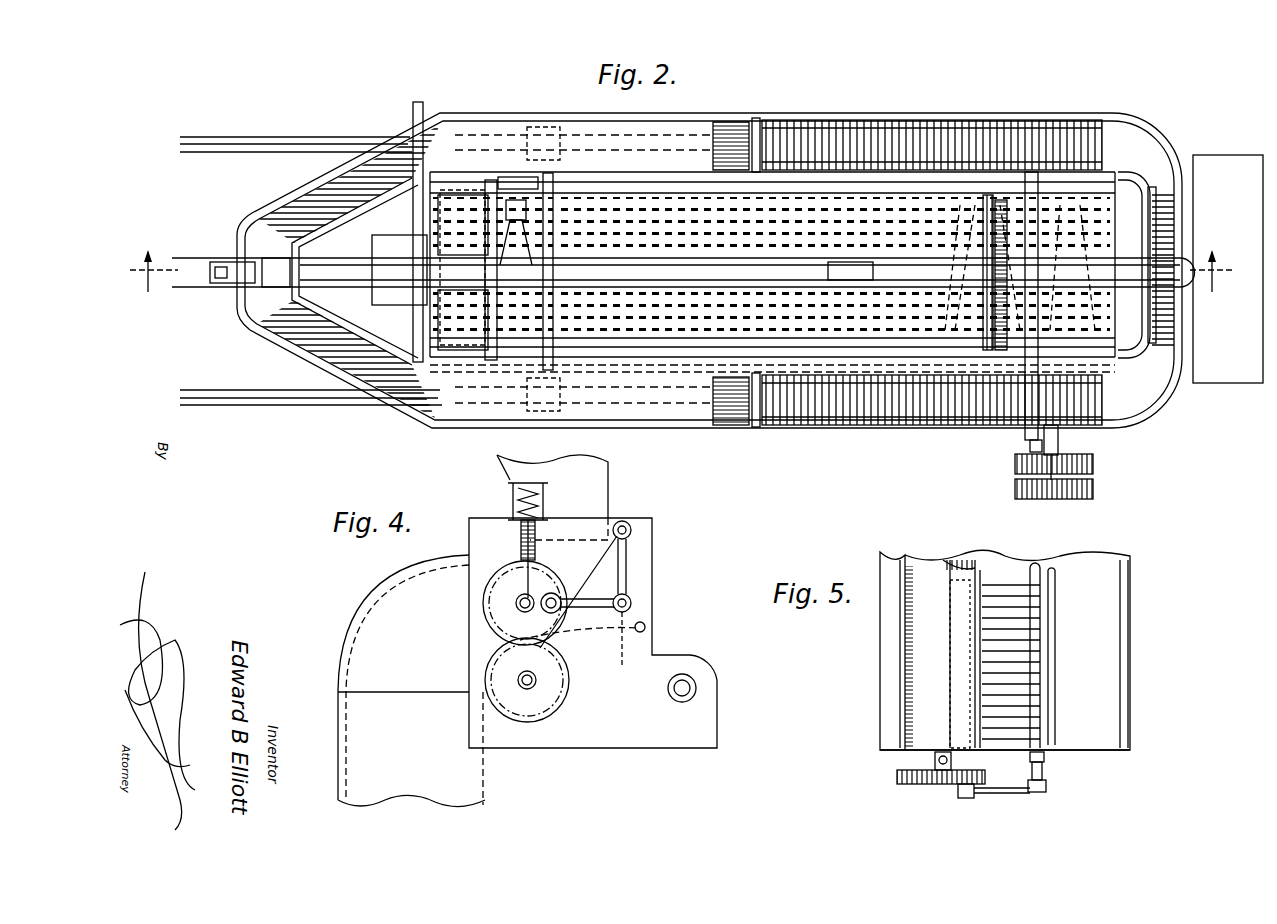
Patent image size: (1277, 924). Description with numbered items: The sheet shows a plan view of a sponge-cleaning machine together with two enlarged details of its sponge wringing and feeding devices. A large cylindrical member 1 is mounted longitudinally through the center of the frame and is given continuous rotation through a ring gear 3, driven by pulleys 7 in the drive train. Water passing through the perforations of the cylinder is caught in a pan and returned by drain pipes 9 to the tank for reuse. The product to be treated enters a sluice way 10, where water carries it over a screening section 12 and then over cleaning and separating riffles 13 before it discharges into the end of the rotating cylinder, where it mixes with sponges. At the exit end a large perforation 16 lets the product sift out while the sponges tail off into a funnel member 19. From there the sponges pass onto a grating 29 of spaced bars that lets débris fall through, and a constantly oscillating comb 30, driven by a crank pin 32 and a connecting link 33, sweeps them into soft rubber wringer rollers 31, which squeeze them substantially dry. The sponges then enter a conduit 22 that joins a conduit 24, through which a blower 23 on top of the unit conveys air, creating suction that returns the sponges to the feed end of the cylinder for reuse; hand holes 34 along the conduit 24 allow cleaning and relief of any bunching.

In FIG. 2, the cylindrical member 1 is at (1085, 325).
In FIG. 2, the ring gear 3 is at (993, 110).
In FIG. 2, the pulleys 7 is at (1095, 458).
In FIG. 2, the drain pipes 9 is at (282, 150).
In FIG. 2, the sluice way 10 is at (772, 275).
In FIG. 2, the screening section 12 is at (730, 135).
In FIG. 2, the cleaning and separating riffles 13 is at (835, 140).
In FIG. 2, the large perforation 16 is at (440, 310).
In FIG. 2, the funnel member 19 is at (372, 243).
In FIG. 4, the conduit 22 is at (458, 772).
In FIG. 2, the blower 23 is at (518, 240).
In FIG. 2, the conduit 24 is at (683, 272).
In FIG. 4, the grating 29 is at (604, 640).
In FIG. 5, the grating 29 is at (1006, 600).
In FIG. 4, the comb 30 is at (652, 637).
In FIG. 5, the comb 30 is at (1048, 672).
In FIG. 4, the wringer rollers 31 is at (526, 602).
In FIG. 5, the wringer rollers 31 is at (897, 777).
In FIG. 4, the crank pin 32 is at (556, 612).
In FIG. 5, the crank pin 32 is at (955, 800).
In FIG. 4, the connecting link 33 is at (596, 612).
In FIG. 5, the connecting link 33 is at (1010, 784).
In FIG. 2, the hand holes 34 is at (828, 267).